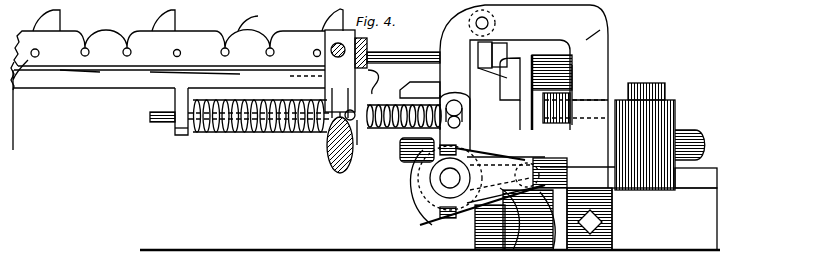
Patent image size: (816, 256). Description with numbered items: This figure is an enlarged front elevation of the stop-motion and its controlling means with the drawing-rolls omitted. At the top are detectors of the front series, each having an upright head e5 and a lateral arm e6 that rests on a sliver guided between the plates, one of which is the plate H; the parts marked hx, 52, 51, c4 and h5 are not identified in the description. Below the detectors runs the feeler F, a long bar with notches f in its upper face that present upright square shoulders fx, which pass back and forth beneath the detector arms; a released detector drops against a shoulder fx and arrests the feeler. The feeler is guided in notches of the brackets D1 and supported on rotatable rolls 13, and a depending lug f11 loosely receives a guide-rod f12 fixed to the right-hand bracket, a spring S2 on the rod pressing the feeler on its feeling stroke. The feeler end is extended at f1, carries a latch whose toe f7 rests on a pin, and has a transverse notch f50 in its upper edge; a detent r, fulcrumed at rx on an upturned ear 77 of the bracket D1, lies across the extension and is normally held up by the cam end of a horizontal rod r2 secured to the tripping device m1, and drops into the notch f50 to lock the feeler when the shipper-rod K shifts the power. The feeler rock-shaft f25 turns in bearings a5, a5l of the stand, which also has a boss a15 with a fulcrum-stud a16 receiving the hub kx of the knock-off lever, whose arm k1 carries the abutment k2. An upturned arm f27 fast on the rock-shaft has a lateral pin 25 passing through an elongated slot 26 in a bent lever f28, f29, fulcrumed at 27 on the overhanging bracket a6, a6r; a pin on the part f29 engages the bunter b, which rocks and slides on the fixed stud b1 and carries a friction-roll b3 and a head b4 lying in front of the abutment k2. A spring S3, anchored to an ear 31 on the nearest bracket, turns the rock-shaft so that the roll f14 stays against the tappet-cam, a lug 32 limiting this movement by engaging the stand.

The guide-plate H is at (20, 113).
The feeler F is at (50, 90).
The notches f is at (83, 74).
The bearings a5 is at (152, 22).
The upright head e5 is at (192, 14).
The bracket a6 is at (238, 46).
The lateral arm e6 is at (276, 42).
The pin hole hx is at (173, 53).
The notch 52 is at (238, 60).
The notch 51 is at (272, 52).
The shoulders fx is at (240, 75).
The transverse notch f50 is at (293, 73).
The rotatable rolls 13 is at (325, 92).
The guide-rod f12 is at (160, 121).
The depending lug f11 is at (185, 132).
The spring S2 is at (230, 134).
The upturned ear 77 is at (330, 116).
The detent r is at (324, 45).
The horizontal rod r2 is at (404, 52).
The ear 31 is at (332, 148).
The spring S3 is at (352, 176).
The brackets D1 is at (358, 128).
The feeler extension f1 is at (370, 152).
The upturned arm f27 is at (400, 160).
The toe f7 is at (412, 84).
The fulcrum rx is at (375, 80).
The elongated slot 26 is at (454, 100).
The bent lever part f28 is at (441, 55).
The fulcrum 27 is at (489, 22).
The tripping device m1 is at (504, 46).
The pin c4 is at (492, 68).
The abutment k2 is at (511, 94).
The friction-roll b3 is at (565, 96).
The bunter head b4 is at (556, 56).
The bracket a6r is at (612, 38).
The knock-off lever arm k1 is at (565, 80).
The bent lever part f29 is at (606, 92).
The bunter b is at (582, 100).
The fulcrum-stud a16 is at (650, 86).
The hub kx is at (674, 114).
The shipper-rod K is at (742, 134).
The boss a15 is at (706, 150).
The roll f14 is at (560, 162).
The lateral pin 25 is at (500, 160).
The lug 32 is at (428, 175).
The bearing a5l is at (442, 212).
The feeler rock-shaft f25 is at (515, 192).
The fixed stud b1 is at (568, 220).
The support h5 is at (692, 182).